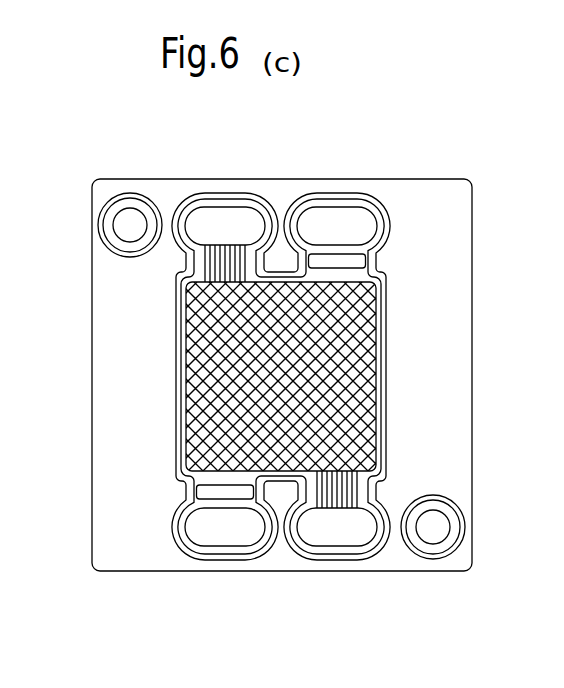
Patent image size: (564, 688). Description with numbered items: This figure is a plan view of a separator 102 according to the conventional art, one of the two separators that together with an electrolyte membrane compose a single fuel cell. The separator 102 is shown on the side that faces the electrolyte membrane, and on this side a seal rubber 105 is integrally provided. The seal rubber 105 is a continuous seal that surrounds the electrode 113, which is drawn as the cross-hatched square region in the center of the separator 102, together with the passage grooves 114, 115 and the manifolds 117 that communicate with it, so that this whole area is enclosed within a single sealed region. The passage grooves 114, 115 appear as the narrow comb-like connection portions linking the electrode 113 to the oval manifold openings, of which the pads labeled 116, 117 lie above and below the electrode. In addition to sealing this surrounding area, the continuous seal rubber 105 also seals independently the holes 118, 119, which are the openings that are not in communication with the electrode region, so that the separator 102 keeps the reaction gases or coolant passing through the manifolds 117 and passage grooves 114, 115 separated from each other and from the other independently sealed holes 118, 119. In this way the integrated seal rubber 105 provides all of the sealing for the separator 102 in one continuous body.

The separator 102 is at (100, 262).
The seal rubber 105 is at (387, 389).
The electrode 113 is at (200, 420).
The passage groove 114 is at (213, 262).
The passage groove 115 is at (345, 487).
The terminal pad 116 is at (236, 217).
The manifold 117 is at (342, 535).
The hole 118 is at (343, 214).
The hole 119 is at (232, 535).